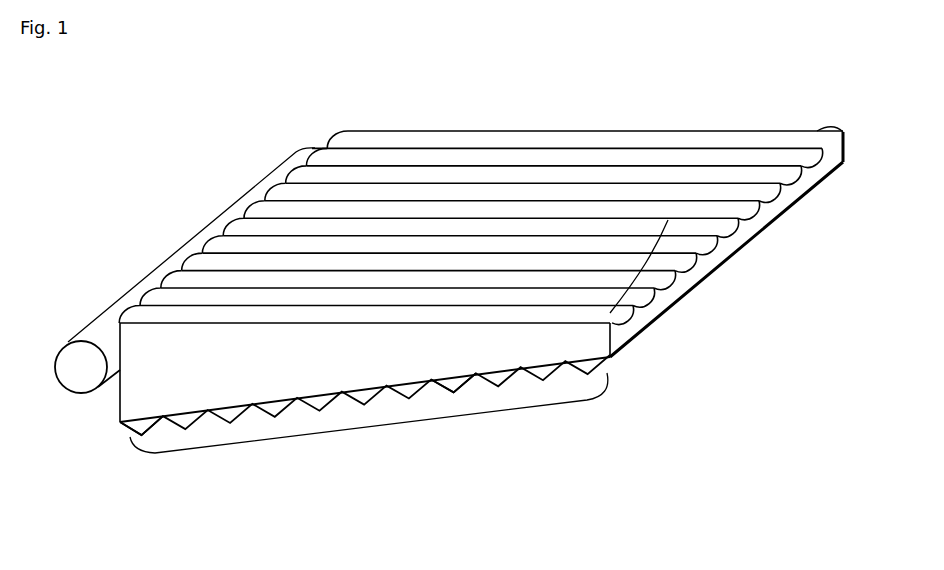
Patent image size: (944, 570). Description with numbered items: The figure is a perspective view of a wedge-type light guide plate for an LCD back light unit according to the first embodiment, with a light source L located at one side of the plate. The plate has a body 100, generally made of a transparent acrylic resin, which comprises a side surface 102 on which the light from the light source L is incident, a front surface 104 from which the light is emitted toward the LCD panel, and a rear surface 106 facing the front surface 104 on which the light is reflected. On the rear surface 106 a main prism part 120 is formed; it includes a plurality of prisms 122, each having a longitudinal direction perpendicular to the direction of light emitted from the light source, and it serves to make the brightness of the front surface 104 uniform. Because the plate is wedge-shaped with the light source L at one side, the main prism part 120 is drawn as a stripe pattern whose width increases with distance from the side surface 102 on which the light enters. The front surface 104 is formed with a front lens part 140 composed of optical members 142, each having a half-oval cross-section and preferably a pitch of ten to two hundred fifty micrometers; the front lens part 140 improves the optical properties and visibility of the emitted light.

The body 100 is at (272, 372).
The side surface 102 is at (120, 388).
The front surface 104 is at (173, 323).
The rear surface 106 is at (163, 418).
The main prism part 120 is at (367, 428).
The prism 122 is at (452, 390).
The front lens part 140 is at (823, 127).
The optical member 142 is at (681, 258).
The light source L is at (70, 372).